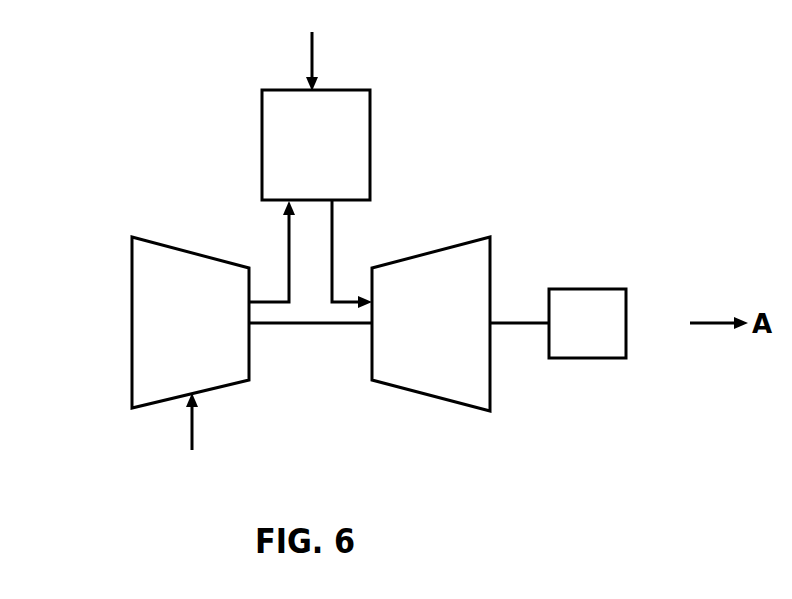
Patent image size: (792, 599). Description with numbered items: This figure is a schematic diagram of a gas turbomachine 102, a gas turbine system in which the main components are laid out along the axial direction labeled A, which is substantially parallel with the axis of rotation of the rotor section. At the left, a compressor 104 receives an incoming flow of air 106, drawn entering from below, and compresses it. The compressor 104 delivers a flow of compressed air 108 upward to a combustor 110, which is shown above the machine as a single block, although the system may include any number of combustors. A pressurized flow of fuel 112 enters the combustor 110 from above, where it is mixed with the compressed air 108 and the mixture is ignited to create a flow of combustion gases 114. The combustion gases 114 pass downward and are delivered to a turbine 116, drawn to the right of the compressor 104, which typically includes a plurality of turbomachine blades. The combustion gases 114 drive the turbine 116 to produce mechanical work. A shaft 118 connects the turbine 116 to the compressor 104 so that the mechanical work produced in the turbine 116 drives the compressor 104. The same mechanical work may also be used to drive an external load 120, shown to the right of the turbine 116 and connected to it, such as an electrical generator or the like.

The gas turbomachine 102 is at (176, 109).
The compressor 104 is at (210, 339).
The incoming flow of air 106 is at (192, 430).
The flow of compressed air 108 is at (287, 259).
The combustor 110 is at (339, 161).
The pressurized flow of fuel 112 is at (313, 60).
The flow of combustion gases 114 is at (335, 265).
The turbine 116 is at (451, 339).
The shaft 118 is at (311, 332).
The external load 120 is at (608, 339).